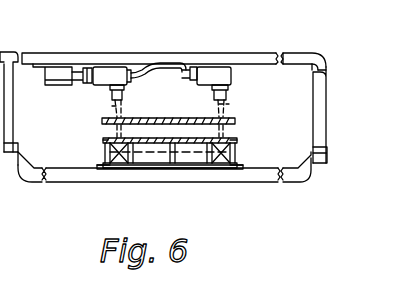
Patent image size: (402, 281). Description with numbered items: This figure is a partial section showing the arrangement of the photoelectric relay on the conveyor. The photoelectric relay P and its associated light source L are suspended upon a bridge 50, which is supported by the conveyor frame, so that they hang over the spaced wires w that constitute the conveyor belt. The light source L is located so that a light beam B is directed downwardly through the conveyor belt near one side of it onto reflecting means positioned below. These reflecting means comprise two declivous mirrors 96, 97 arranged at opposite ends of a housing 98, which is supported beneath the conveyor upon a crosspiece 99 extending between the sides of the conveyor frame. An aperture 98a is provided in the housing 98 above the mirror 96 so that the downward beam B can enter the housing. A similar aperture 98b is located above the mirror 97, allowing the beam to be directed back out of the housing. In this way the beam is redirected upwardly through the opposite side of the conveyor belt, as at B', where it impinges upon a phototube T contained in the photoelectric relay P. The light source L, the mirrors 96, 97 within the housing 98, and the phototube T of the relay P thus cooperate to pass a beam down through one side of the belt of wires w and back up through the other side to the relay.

The bridge 50 is at (306, 50).
The photoelectric relay P is at (113, 70).
The phototube T is at (120, 66).
The light source L is at (209, 69).
The light beam B is at (242, 93).
The redirected light beam B' is at (86, 107).
The spaced wires w is at (235, 121).
The housing 98 is at (235, 158).
The aperture 98a is at (230, 137).
The aperture 98b is at (108, 137).
The crosspiece 99 is at (178, 171).
The declivous mirror 97 is at (107, 167).
The declivous mirror 96 is at (224, 168).